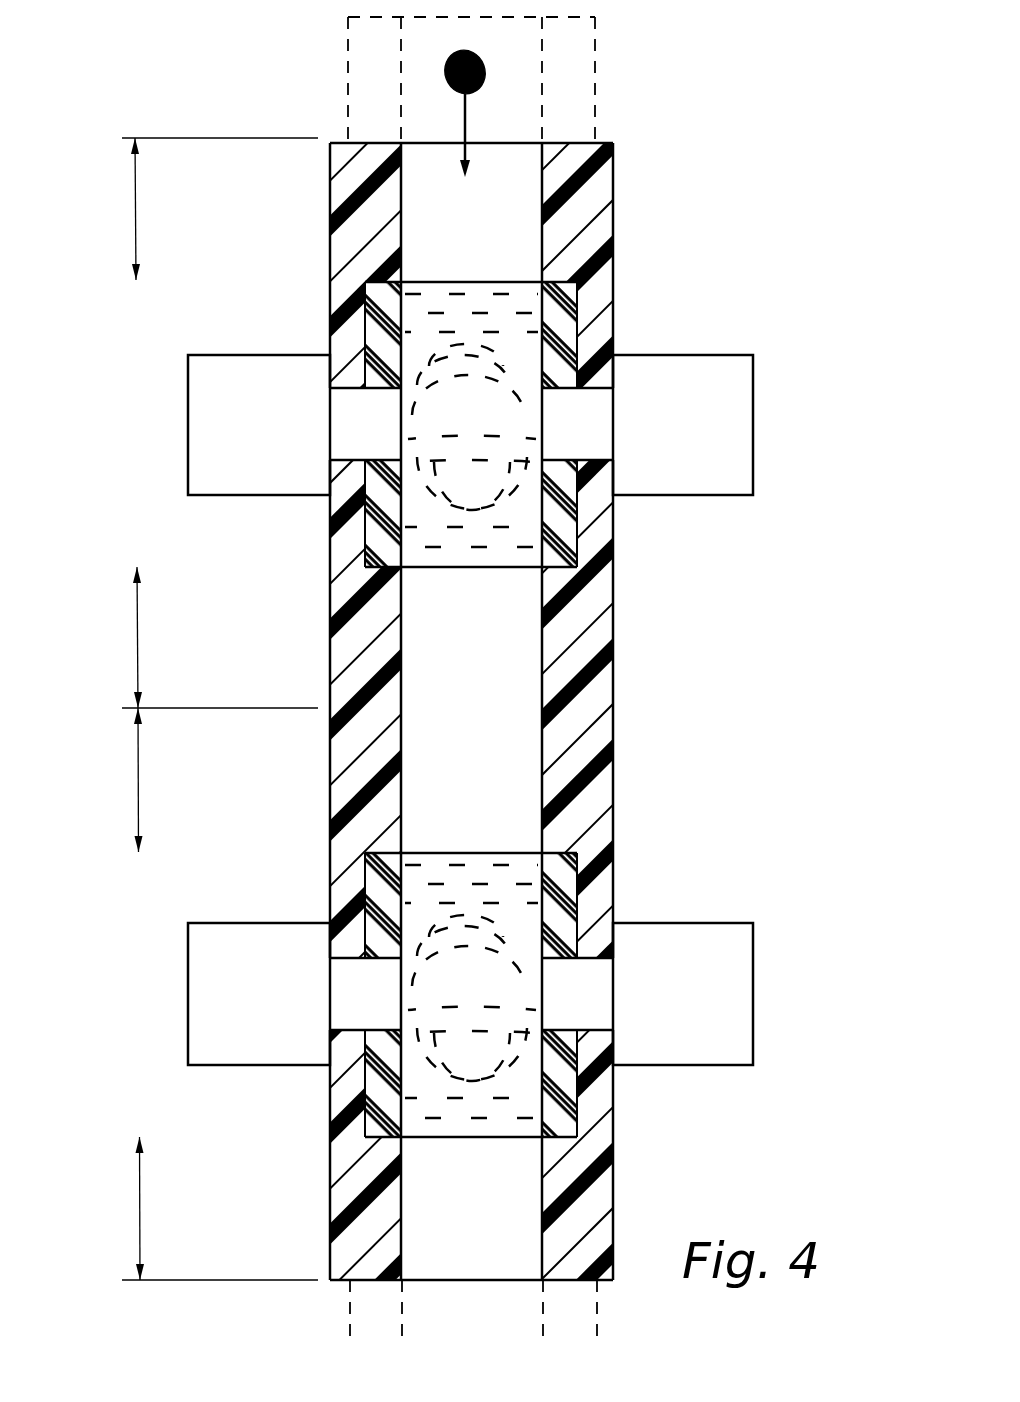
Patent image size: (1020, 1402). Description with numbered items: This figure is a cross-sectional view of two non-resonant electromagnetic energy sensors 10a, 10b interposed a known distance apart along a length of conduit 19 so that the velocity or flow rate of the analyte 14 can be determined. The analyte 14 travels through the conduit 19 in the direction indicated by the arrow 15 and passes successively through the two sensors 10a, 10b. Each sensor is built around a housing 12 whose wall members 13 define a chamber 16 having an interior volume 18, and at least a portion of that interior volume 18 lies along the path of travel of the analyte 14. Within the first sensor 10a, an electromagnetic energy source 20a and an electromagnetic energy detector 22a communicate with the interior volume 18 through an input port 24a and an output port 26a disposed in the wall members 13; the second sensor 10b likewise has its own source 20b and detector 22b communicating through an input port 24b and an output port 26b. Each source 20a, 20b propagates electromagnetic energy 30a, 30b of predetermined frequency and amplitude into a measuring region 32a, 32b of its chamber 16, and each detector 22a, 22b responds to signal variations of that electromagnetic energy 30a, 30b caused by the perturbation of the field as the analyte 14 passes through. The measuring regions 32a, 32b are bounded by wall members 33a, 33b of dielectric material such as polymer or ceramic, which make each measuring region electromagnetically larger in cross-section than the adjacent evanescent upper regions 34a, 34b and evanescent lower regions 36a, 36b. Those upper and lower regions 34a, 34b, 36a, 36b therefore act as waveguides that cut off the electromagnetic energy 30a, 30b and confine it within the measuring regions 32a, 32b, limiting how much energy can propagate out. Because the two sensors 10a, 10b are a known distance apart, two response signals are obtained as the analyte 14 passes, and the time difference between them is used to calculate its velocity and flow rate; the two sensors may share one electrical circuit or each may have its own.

The first non-resonant electromagnetic energy sensor 10a is at (456, 418).
The second non-resonant electromagnetic energy sensor 10b is at (446, 999).
The housing 12 is at (510, 700).
The wall members 13 is at (603, 786).
The analyte 14 is at (487, 70).
The arrow 15 is at (468, 118).
The chamber 16 is at (520, 648).
The interior volume 18 is at (474, 729).
The conduit 19 is at (580, 56).
The electromagnetic energy source 20a is at (274, 436).
The electromagnetic energy source 20b is at (266, 1011).
The electromagnetic energy detector 22a is at (690, 436).
The electromagnetic energy detector 22b is at (686, 1011).
The input port 24a is at (357, 447).
The input port 24b is at (358, 1003).
The output port 26a is at (600, 442).
The output port 26b is at (600, 1003).
The electromagnetic energy 30a is at (472, 508).
The electromagnetic energy 30b is at (467, 1085).
The measuring region 32a is at (512, 352).
The measuring region 32b is at (512, 922).
The wall members of the measuring region 33a is at (557, 297).
The wall members of the measuring region 33b is at (530, 860).
The evanescent upper region 34a is at (136, 228).
The evanescent upper region 34b is at (138, 796).
The evanescent lower region 36a is at (137, 646).
The evanescent lower region 36b is at (140, 1226).